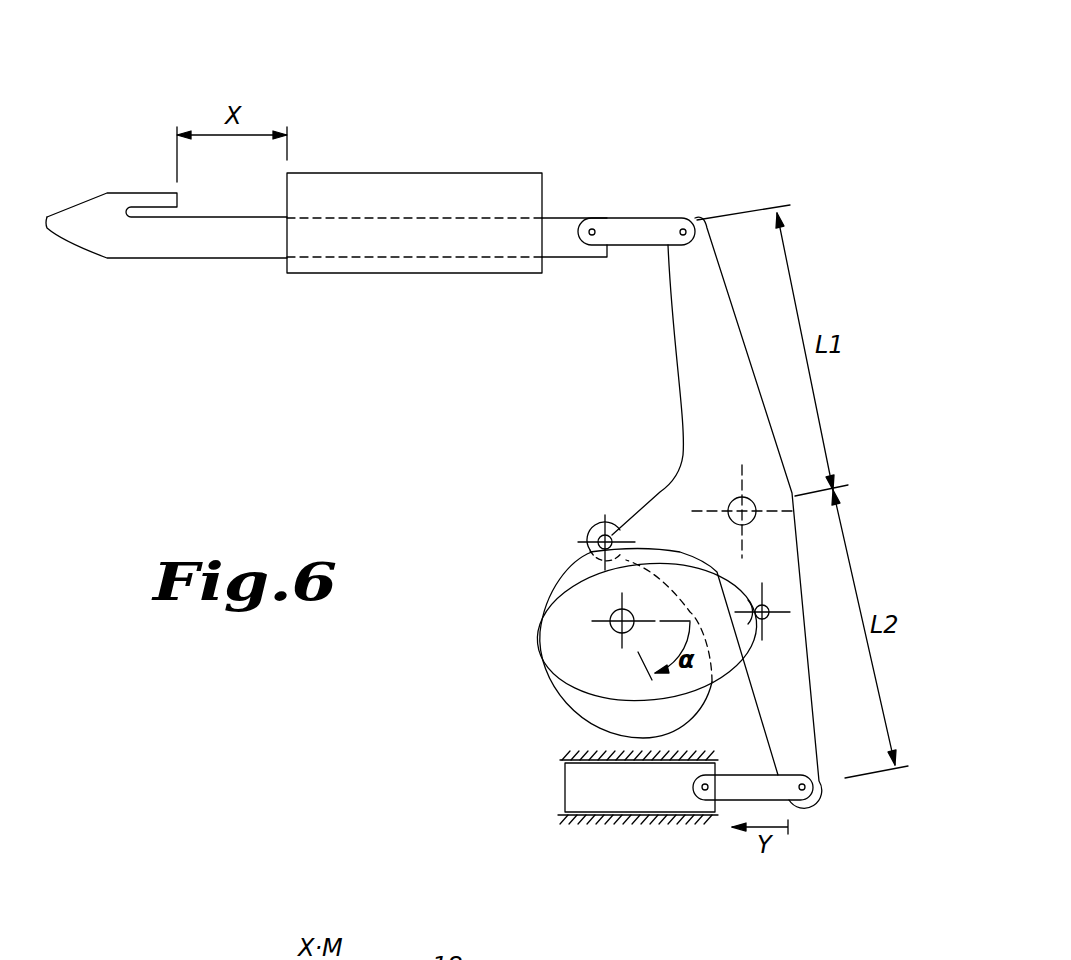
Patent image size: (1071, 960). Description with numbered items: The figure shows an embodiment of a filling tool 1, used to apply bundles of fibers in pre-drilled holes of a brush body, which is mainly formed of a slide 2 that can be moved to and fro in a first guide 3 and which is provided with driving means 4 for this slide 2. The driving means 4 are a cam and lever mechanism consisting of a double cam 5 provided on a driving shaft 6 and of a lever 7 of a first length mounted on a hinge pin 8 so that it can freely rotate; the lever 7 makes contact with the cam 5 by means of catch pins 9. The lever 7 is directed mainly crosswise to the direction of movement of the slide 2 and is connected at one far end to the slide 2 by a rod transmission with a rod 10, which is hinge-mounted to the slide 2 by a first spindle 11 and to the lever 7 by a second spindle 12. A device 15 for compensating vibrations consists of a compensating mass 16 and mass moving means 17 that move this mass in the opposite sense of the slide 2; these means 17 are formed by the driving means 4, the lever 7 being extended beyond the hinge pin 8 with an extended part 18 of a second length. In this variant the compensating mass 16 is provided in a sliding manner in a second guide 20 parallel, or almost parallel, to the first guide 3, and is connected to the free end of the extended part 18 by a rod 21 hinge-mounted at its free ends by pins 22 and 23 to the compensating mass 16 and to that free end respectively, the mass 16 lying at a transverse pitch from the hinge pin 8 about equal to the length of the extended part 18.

The tool 1 is at (728, 112).
The slide 2 is at (137, 252).
The first guide 3 is at (412, 267).
The driving means 4 is at (863, 418).
The cam 5 is at (605, 708).
The driving shaft 6 is at (617, 625).
The lever 7 is at (698, 363).
The hinge pin 8 is at (733, 503).
The catch pins 9 is at (595, 532).
The rod 10 is at (632, 227).
The first spindle 11 is at (585, 243).
The second spindle 12 is at (685, 217).
The device for compensating the vibrations 15 is at (470, 745).
The compensating mass 16 is at (573, 777).
The mass moving means 17 is at (795, 882).
The extended part 18 is at (798, 717).
The second guide 20 is at (572, 818).
The rod 21 is at (745, 788).
The pin 22 is at (698, 787).
The pin 23 is at (820, 790).